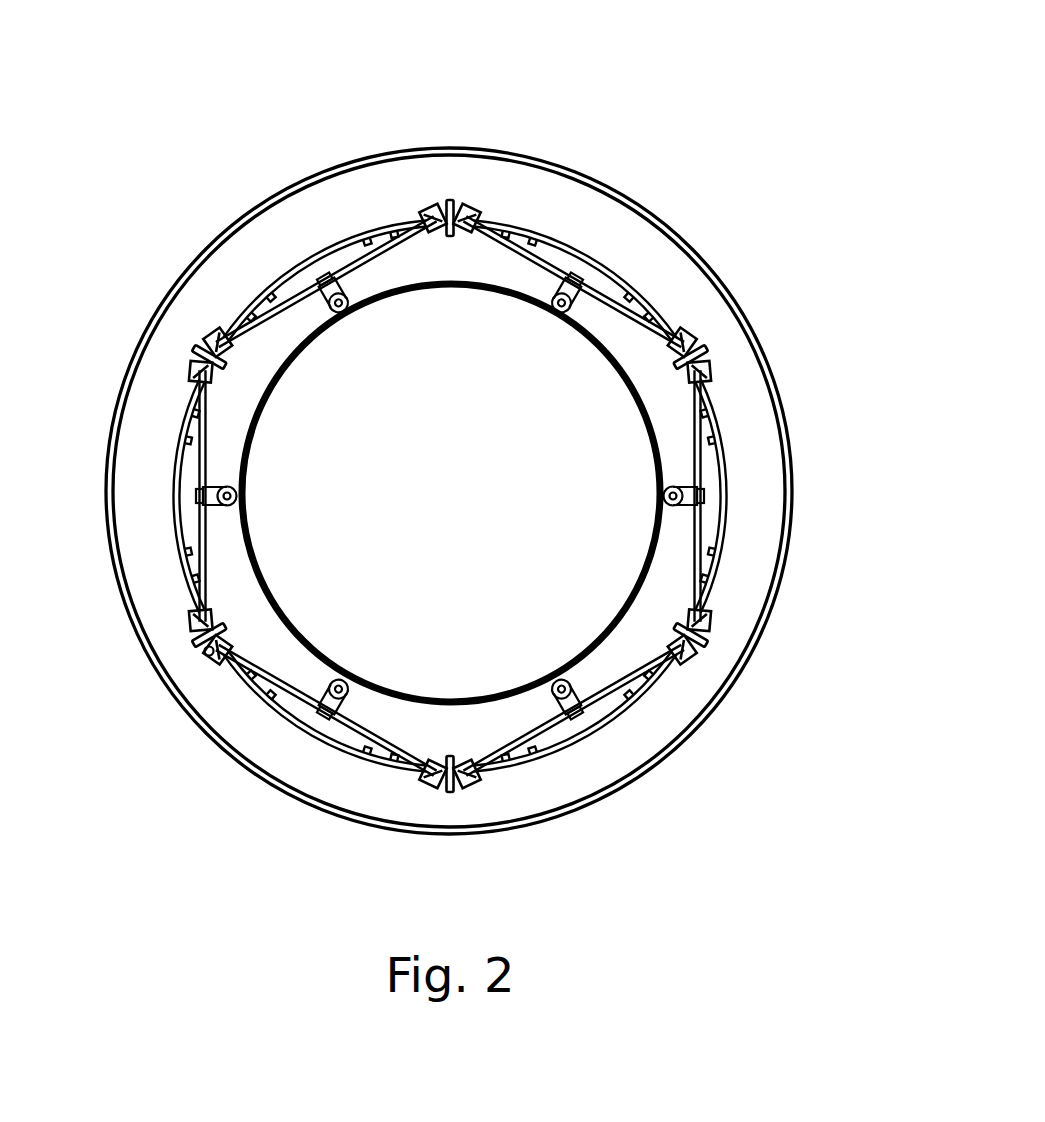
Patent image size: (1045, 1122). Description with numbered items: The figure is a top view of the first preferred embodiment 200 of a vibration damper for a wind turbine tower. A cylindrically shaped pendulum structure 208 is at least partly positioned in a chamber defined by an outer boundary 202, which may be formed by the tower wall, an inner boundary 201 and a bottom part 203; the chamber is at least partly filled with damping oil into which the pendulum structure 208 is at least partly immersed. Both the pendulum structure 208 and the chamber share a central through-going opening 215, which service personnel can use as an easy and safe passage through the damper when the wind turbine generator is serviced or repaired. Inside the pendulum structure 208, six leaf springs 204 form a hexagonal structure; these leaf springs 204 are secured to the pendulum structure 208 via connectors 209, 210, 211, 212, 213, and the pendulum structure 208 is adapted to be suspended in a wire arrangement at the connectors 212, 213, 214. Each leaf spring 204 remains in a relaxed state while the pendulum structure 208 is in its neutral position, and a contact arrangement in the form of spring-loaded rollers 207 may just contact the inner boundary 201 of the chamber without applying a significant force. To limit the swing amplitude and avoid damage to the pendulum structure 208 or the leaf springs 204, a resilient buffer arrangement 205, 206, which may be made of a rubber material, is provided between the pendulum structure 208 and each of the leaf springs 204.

The first preferred embodiment 200 is at (670, 143).
The inner boundary 201 is at (660, 517).
The outer boundary 202 is at (795, 493).
The bottom part 203 is at (740, 435).
The leaf spring 204 is at (347, 722).
The resilient buffer arrangement 205 is at (207, 655).
The resilient buffer arrangement 206 is at (378, 760).
The spring-loaded roller 207 is at (333, 680).
The pendulum structure 208 is at (293, 720).
The connector 209 is at (207, 643).
The connector 210 is at (713, 625).
The connector 211 is at (442, 203).
The connector 212 is at (457, 785).
The connector 213 is at (700, 343).
The connector 214 is at (197, 333).
The through-going opening 215 is at (427, 340).